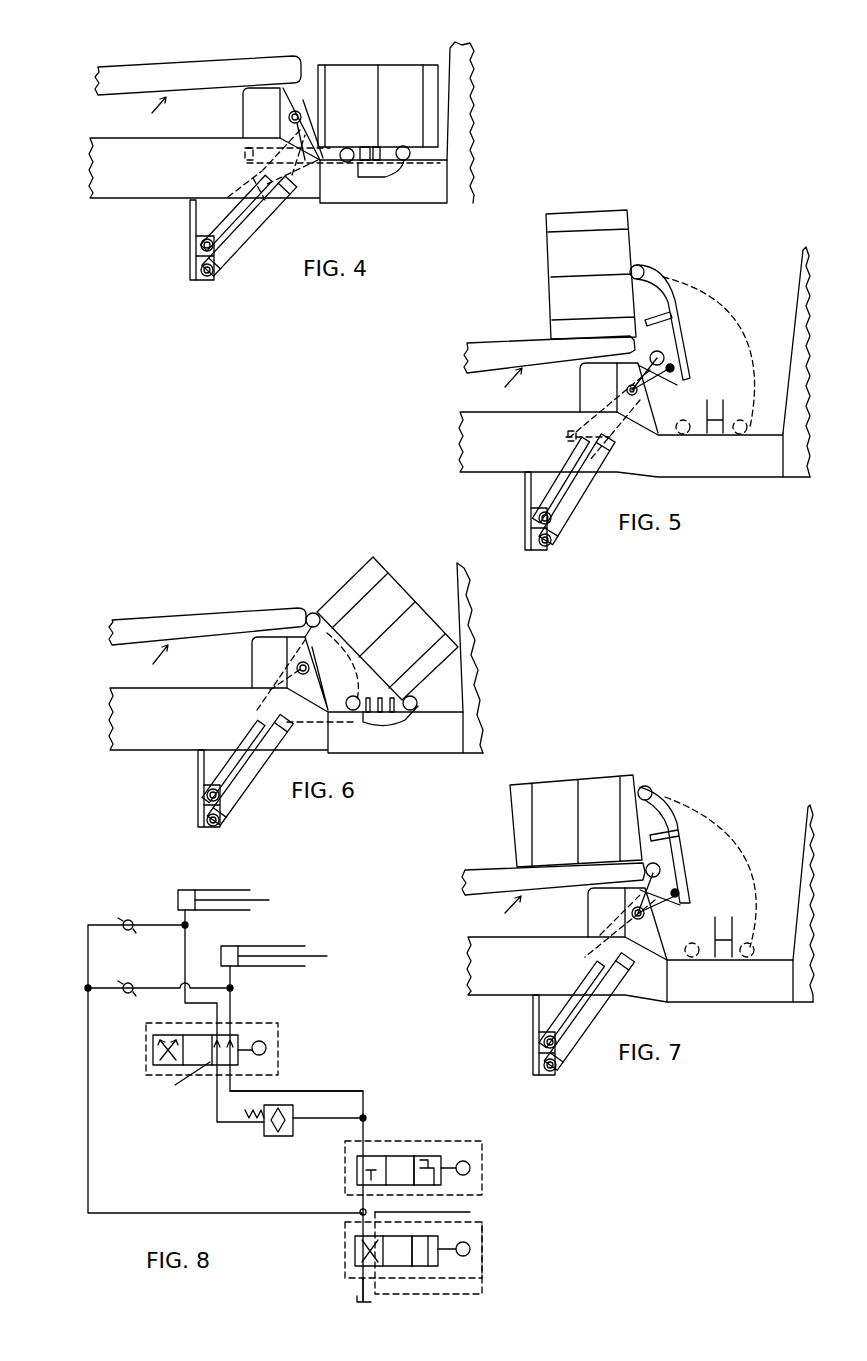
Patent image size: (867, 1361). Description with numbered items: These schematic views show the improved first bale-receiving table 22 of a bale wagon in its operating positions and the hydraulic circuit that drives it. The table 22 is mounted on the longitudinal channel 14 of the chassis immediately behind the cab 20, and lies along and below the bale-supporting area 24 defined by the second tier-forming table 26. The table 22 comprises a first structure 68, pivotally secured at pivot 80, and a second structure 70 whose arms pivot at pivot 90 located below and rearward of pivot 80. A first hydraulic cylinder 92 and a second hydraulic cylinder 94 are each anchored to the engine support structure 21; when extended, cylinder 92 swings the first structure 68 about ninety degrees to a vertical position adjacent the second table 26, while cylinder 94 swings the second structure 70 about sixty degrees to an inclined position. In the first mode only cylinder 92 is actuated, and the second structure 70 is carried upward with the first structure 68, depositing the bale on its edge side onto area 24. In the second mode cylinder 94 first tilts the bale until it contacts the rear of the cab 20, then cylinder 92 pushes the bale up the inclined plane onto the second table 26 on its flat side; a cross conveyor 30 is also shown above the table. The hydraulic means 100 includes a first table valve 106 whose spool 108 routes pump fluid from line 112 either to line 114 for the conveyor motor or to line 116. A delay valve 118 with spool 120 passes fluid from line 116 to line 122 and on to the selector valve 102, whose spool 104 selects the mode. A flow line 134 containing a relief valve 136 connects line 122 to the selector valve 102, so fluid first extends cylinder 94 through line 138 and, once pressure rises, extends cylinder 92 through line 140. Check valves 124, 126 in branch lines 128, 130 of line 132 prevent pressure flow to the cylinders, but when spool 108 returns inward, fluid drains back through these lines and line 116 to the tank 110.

In FIG. 4, the longitudinally extending channels 14 is at (146, 200).
In FIG. 5, the longitudinally extending channels 14 is at (503, 472).
In FIG. 6, the longitudinally extending channels 14 is at (162, 752).
In FIG. 7, the longitudinally extending channels 14 is at (510, 997).
In FIG. 4, the cab 20 is at (453, 68).
In FIG. 5, the cab 20 is at (797, 300).
In FIG. 6, the cab 20 is at (457, 603).
In FIG. 7, the cab 20 is at (800, 860).
In FIG. 4, the support structure 21 is at (190, 232).
In FIG. 5, the support structure 21 is at (525, 506).
In FIG. 6, the support structure 21 is at (195, 787).
In FIG. 7, the support structure 21 is at (532, 1040).
In FIG. 4, the first bale-receiving table 22 is at (401, 125).
In FIG. 5, the first bale-receiving table 22 is at (704, 273).
In FIG. 6, the first bale-receiving table 22 is at (377, 740).
In FIG. 7, the first bale-receiving table 22 is at (711, 864).
In FIG. 4, the bale-supporting area 24 is at (147, 64).
In FIG. 5, the bale-supporting area 24 is at (518, 338).
In FIG. 6, the bale-supporting area 24 is at (157, 618).
In FIG. 7, the bale-supporting area 24 is at (493, 860).
In FIG. 4, the second tier-forming table 26 is at (146, 112).
In FIG. 5, the second tier-forming table 26 is at (497, 385).
In FIG. 6, the second tier-forming table 26 is at (145, 661).
In FIG. 7, the second tier-forming table 26 is at (497, 912).
In FIG. 5, the cross conveyor 30 is at (723, 391).
In FIG. 7, the cross conveyor 30 is at (723, 914).
In FIG. 4, the first structure 68 is at (381, 180).
In FIG. 5, the first structure 68 is at (666, 277).
In FIG. 6, the first structure 68 is at (393, 727).
In FIG. 7, the first structure 68 is at (680, 815).
In FIG. 4, the second structure 70 is at (325, 145).
In FIG. 5, the second structure 70 is at (650, 363).
In FIG. 6, the second structure 70 is at (267, 672).
In FIG. 7, the second structure 70 is at (623, 907).
In FIG. 4, the pivotal securement 80 is at (299, 110).
In FIG. 5, the pivotal securement 80 is at (650, 402).
In FIG. 4, the pivotal securement 90 is at (245, 155).
In FIG. 5, the pivotal securement 90 is at (574, 430).
In FIG. 4, the first hydraulic cylinder 92 is at (258, 225).
In FIG. 5, the first hydraulic cylinder 92 is at (573, 520).
In FIG. 6, the first hydraulic cylinder 92 is at (252, 790).
In FIG. 7, the first hydraulic cylinder 92 is at (587, 1042).
In FIG. 8, the first hydraulic cylinder 92 is at (178, 898).
In FIG. 4, the second hydraulic cylinder 94 is at (220, 218).
In FIG. 5, the second hydraulic cylinder 94 is at (557, 487).
In FIG. 6, the second hydraulic cylinder 94 is at (231, 760).
In FIG. 7, the second hydraulic cylinder 94 is at (565, 1012).
In FIG. 8, the second hydraulic cylinder 94 is at (262, 948).
In FIG. 8, the hydraulic means 100 is at (362, 1011).
In FIG. 8, the first table selector valve 102 is at (268, 1023).
In FIG. 8, the spool 104 is at (170, 1087).
In FIG. 8, the first table valve 106 is at (484, 1238).
In FIG. 8, the spool 108 is at (400, 1236).
In FIG. 8, the tank 110 is at (352, 1300).
In FIG. 8, the line 112 is at (482, 1290).
In FIG. 8, the line 114 is at (470, 1212).
In FIG. 8, the line 116 is at (358, 1215).
In FIG. 8, the first table delay valve 118 is at (484, 1168).
In FIG. 8, the spool 120 is at (405, 1155).
In FIG. 8, the line 122 is at (328, 1091).
In FIG. 8, the one-way check valve 124 is at (122, 917).
In FIG. 8, the one-way check valve 126 is at (124, 982).
In FIG. 8, the branch line 128 is at (82, 940).
In FIG. 8, the branch line 130 is at (168, 982).
In FIG. 8, the line 132 is at (88, 1110).
In FIG. 8, the flow line 134 is at (325, 1125).
In FIG. 8, the relief valve 136 is at (262, 1132).
In FIG. 8, the line 138 is at (233, 973).
In FIG. 8, the line 140 is at (190, 910).